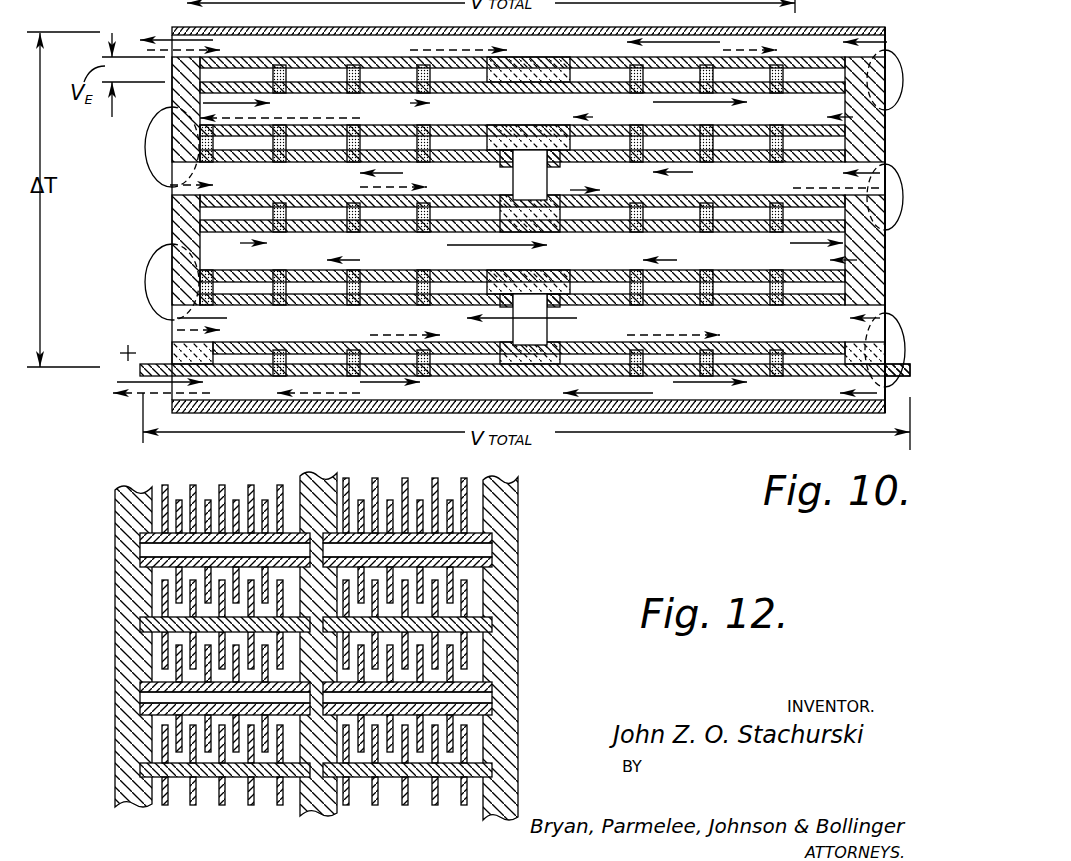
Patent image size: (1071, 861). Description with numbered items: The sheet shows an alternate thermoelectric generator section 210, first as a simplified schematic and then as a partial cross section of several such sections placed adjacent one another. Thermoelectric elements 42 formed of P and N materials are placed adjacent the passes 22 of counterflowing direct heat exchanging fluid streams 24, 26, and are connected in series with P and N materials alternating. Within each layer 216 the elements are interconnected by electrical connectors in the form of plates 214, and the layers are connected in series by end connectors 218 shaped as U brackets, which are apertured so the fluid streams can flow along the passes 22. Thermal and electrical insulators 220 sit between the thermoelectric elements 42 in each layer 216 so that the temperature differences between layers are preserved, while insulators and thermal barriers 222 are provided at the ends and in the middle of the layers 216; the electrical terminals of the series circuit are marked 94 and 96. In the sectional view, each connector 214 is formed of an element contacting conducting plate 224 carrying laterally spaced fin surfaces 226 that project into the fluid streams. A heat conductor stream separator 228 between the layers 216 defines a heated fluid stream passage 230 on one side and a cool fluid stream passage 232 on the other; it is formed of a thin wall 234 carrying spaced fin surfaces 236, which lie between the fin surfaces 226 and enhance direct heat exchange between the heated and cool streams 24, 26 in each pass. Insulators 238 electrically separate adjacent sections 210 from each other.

In FIG. 10, the pass 22 is at (588, 56).
In FIG. 10, the fluid stream 24 is at (140, 47).
In FIG. 10, the fluid stream 26 is at (143, 42).
In FIG. 10, the thermoelectric element 42 is at (797, 82).
In FIG. 12, the thermoelectric element 42 is at (155, 548).
In FIG. 10, the electrical terminal bar (positive) 94 is at (151, 360).
In FIG. 10, the electrical terminal bar (negative) 96 is at (917, 366).
In FIG. 10, the thermoelectric generator section 210 is at (120, 173).
In FIG. 12, the thermoelectric generator section 210 is at (242, 480).
In FIG. 10, the electrical connector plate 214 is at (267, 270).
In FIG. 10, the layer 216 is at (162, 211).
In FIG. 12, the layer 216 is at (100, 692).
In FIG. 10, the end connector 218 is at (563, 235).
In FIG. 10, the thermal and electrical insulator 220 is at (637, 93).
In FIG. 10, the insulator and thermal barrier 222 is at (170, 232).
In FIG. 12, the conducting plate 224 is at (490, 530).
In FIG. 12, the fin surface 226 is at (180, 500).
In FIG. 12, the heat conductor stream separator 228 is at (497, 628).
In FIG. 12, the heated fluid stream passage 230 is at (475, 668).
In FIG. 12, the cool fluid stream passage 232 is at (477, 595).
In FIG. 12, the thin wall 234 is at (150, 623).
In FIG. 12, the fin surface 236 is at (165, 593).
In FIG. 12, the insulator 238 is at (127, 755).